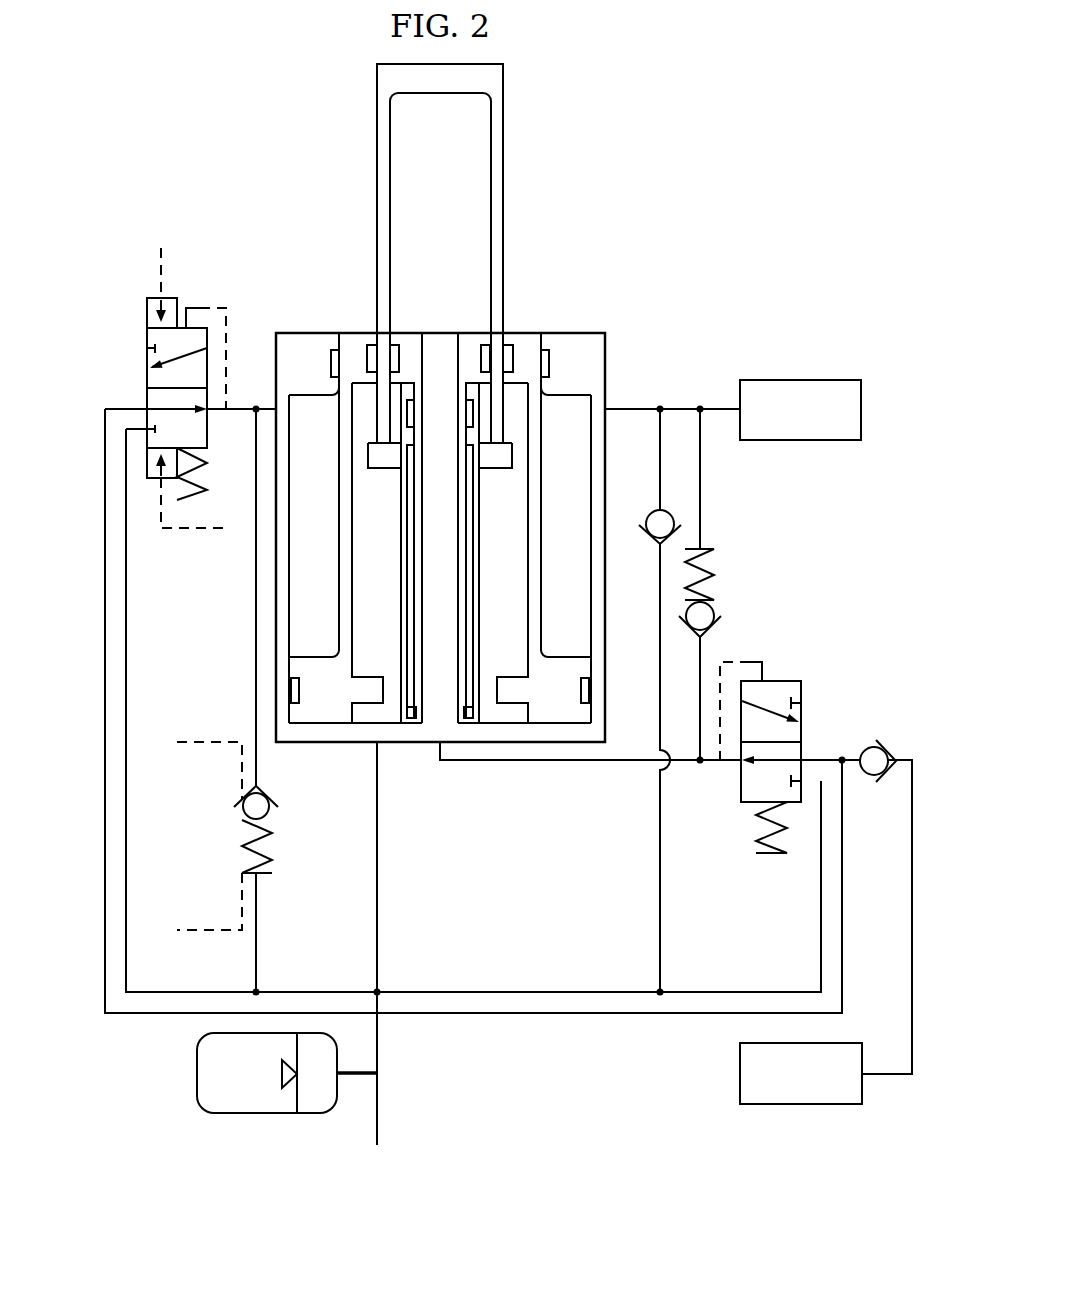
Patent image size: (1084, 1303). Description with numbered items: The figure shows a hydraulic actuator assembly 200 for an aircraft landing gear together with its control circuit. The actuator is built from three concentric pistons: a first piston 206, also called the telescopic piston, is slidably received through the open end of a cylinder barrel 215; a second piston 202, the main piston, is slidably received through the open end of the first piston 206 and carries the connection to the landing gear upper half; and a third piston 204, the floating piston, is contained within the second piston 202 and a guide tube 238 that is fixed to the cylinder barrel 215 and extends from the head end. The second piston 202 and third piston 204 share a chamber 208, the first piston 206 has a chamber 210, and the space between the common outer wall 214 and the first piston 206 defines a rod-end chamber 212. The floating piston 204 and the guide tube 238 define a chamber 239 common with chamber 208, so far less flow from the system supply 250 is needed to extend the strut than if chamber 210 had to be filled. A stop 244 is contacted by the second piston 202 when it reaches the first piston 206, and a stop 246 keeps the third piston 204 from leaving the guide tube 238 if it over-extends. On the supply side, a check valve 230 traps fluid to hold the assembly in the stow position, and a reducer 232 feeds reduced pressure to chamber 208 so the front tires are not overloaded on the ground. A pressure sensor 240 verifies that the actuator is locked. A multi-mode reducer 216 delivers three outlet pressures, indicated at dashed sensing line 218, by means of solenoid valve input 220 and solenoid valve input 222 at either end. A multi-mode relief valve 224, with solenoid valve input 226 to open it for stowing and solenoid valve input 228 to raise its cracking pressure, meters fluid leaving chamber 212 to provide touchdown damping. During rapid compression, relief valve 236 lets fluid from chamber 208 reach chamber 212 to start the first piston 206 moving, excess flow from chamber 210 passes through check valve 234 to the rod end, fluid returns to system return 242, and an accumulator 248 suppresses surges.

The hydraulic actuator assembly 200 is at (234, 182).
The second piston 202 is at (385, 178).
The third piston 204 is at (407, 333).
The first piston 206 is at (520, 333).
The chamber 208 is at (440, 346).
The chamber 210 is at (368, 494).
The chamber 212 is at (334, 531).
The common outer wall 214 is at (275, 355).
The cylinder barrel 215 is at (307, 332).
The multi-mode reducer 216 is at (137, 388).
The dashed sensing line 218 is at (217, 308).
The solenoid valve input 220 is at (160, 280).
The solenoid valve input 222 is at (192, 530).
The multi-mode relief valve 224 is at (216, 840).
The solenoid valve input 226 is at (210, 742).
The solenoid valve input 228 is at (210, 932).
The check valve 230 is at (890, 777).
The reducer 232 is at (724, 783).
The check valve 234 is at (651, 510).
The relief valve 236 is at (738, 566).
The guide tube 238 is at (400, 556).
The chamber 239 is at (411, 590).
The pressure sensor 240 is at (802, 380).
The system return 242 is at (378, 1114).
The stop 244 is at (370, 708).
The stop 246 is at (416, 718).
The accumulator 248 is at (257, 1086).
The system supply 250 is at (800, 1105).